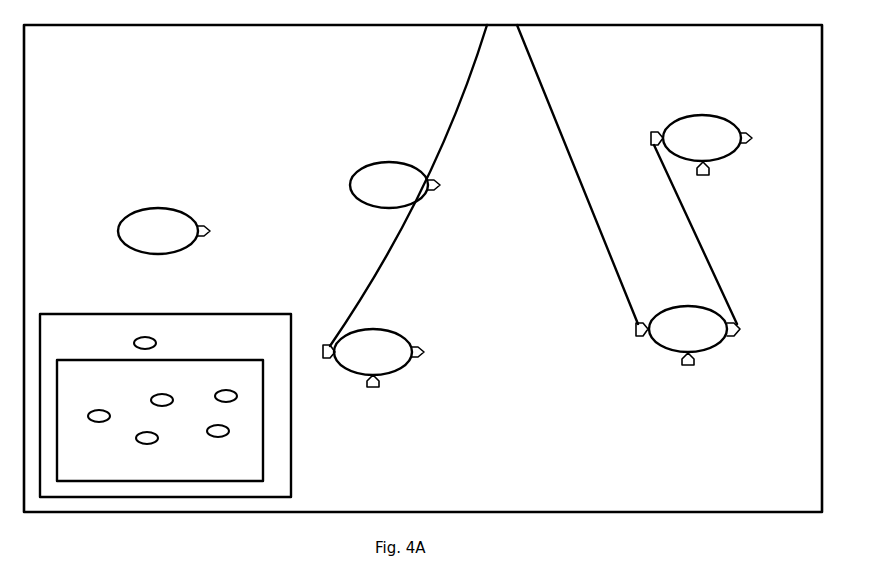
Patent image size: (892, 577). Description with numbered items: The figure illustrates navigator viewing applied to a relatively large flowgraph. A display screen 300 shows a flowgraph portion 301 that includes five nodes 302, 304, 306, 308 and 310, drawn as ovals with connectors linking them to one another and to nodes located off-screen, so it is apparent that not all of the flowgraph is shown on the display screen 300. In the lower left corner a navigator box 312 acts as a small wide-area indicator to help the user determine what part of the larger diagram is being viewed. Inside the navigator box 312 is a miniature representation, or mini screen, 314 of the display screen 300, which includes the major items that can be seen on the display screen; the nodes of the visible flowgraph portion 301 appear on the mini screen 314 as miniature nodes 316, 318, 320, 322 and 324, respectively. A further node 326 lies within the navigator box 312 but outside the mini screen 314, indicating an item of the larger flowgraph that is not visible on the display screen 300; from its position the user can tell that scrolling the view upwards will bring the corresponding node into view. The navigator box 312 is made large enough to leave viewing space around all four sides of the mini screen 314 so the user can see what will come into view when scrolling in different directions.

The display screen 300 is at (565, 25).
The flowgraph portion 301 is at (150, 82).
The node 302 is at (157, 208).
The node 304 is at (387, 162).
The node 306 is at (700, 116).
The node 308 is at (370, 330).
The node 310 is at (685, 307).
The navigator box 312 is at (291, 398).
The miniature representation 314 is at (266, 431).
The mini screen node 316 is at (103, 411).
The mini screen node 318 is at (158, 394).
The mini screen node 320 is at (223, 390).
The mini screen node 322 is at (145, 432).
The mini screen node 324 is at (215, 425).
The node 326 is at (141, 337).